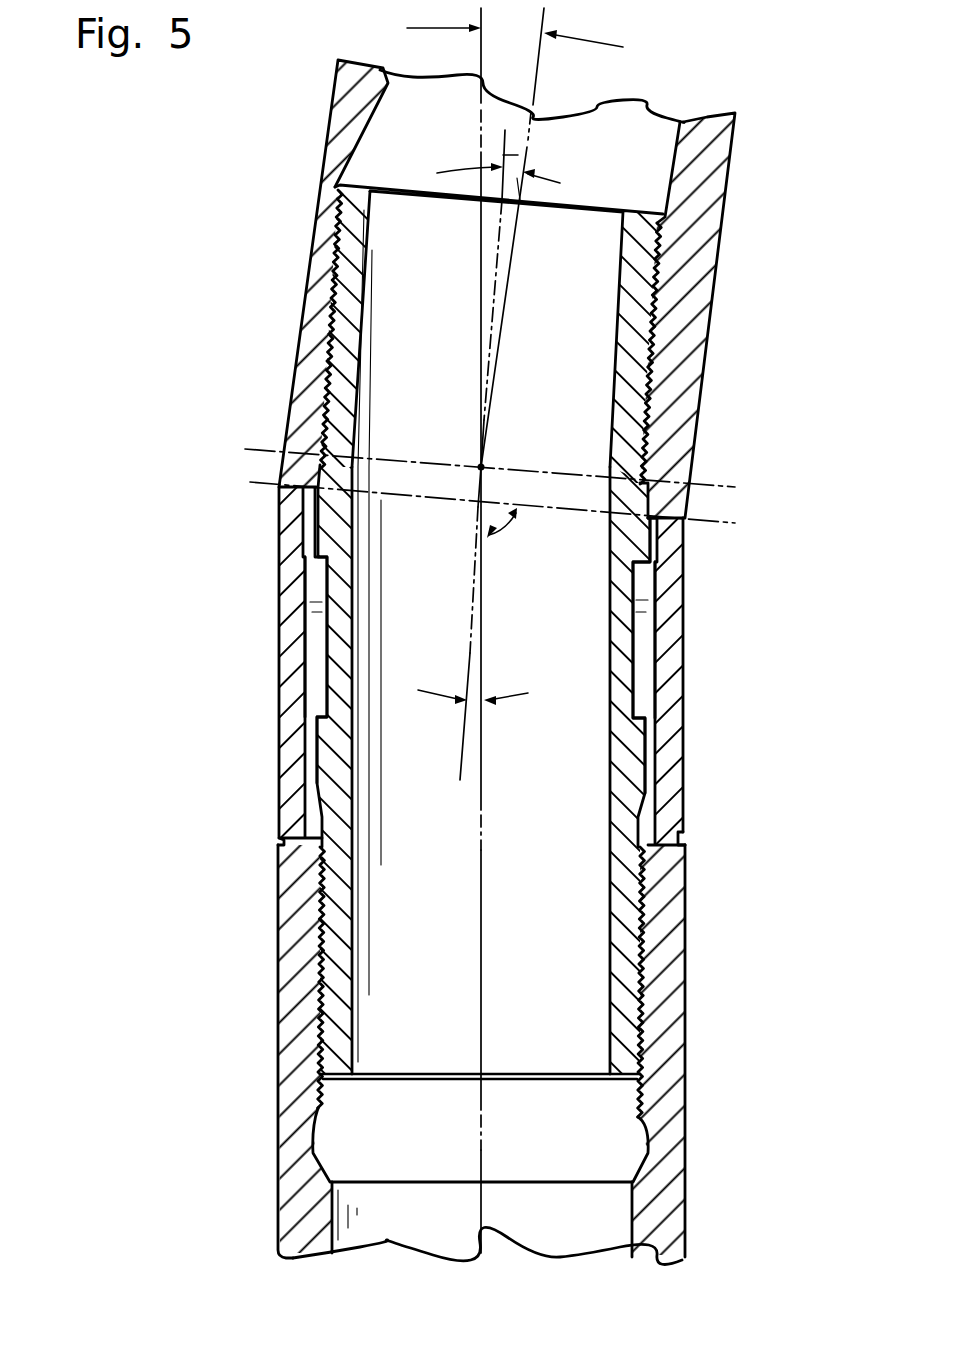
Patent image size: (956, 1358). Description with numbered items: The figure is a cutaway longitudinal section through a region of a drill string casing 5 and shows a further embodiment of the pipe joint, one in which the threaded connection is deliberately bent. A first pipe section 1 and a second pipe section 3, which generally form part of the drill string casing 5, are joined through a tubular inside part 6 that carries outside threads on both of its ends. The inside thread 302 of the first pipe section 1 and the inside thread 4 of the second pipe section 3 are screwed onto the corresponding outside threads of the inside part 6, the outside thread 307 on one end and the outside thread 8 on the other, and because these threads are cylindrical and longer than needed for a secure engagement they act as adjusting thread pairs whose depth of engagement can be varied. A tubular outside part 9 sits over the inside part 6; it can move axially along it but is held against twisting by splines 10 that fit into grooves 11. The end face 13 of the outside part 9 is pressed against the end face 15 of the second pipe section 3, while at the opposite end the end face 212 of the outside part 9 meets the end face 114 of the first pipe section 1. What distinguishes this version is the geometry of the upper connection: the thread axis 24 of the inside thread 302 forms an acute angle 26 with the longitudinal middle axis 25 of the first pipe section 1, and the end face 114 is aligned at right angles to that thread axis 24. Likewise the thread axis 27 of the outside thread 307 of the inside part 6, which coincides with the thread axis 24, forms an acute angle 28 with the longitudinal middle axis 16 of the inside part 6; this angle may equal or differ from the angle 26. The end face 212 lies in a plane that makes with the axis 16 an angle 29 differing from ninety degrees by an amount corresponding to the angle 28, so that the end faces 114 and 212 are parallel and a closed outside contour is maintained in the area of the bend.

The first pipe section 1 is at (710, 229).
The second pipe section 3 is at (688, 1000).
The inside thread 4 is at (642, 932).
The drill string casing 5 is at (709, 421).
The tubular inside part 6 is at (353, 606).
The outside thread 8 is at (322, 954).
The tubular outside part 9 is at (672, 686).
The splines 10 is at (641, 600).
The grooves 11 is at (305, 532).
The end face 13 is at (660, 831).
The end face 15 is at (290, 846).
The longitudinal middle axis 16 is at (484, 888).
The thread axis 24 is at (506, 155).
The longitudinal middle axis 25 is at (534, 91).
The acute angle 26 is at (517, 182).
The thread axis 27 is at (467, 677).
The acute angle 28 is at (486, 703).
The angle 29 is at (516, 514).
The end face 114 is at (345, 462).
The end face 212 is at (657, 520).
The inside thread 302 is at (650, 376).
The outside thread 307 is at (332, 341).